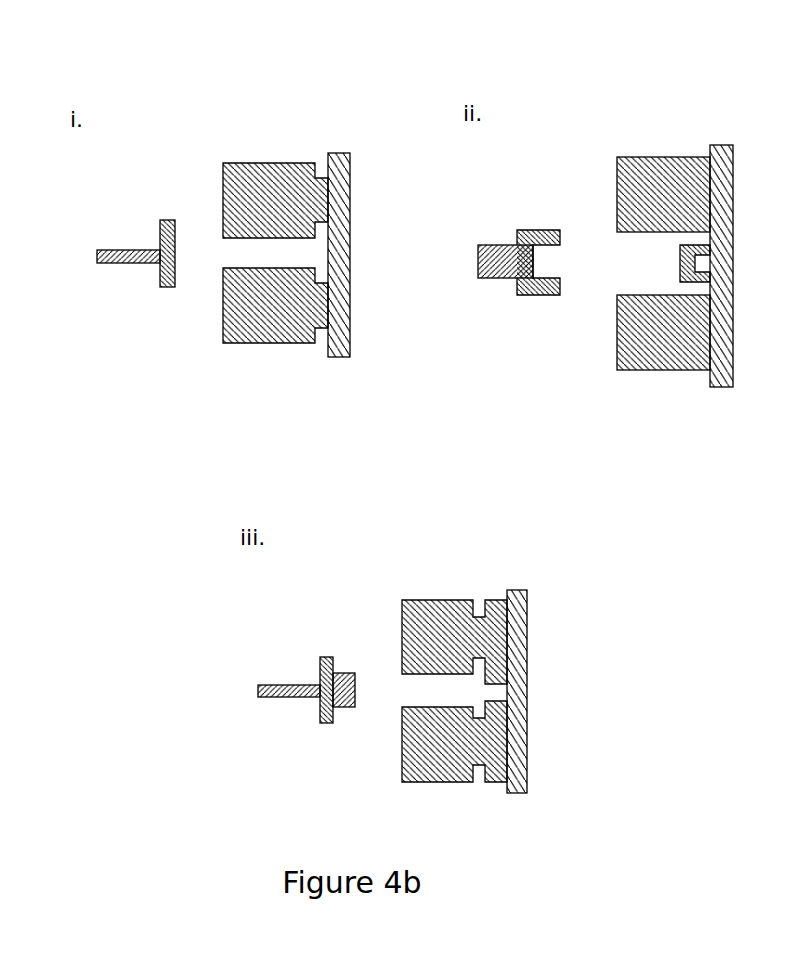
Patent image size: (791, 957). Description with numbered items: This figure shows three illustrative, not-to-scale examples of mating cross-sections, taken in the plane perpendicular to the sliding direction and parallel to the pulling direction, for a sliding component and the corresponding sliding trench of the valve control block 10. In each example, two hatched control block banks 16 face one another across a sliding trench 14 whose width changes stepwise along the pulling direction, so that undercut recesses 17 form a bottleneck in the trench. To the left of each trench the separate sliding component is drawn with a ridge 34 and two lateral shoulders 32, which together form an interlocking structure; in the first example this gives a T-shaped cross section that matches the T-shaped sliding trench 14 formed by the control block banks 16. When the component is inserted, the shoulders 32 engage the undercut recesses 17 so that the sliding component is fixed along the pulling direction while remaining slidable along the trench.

The valve control block 10 is at (321, 104).
The sliding trench 14 is at (461, 475).
The control block bank 16 is at (255, 163).
The undercut recess 17 is at (322, 226).
The lateral shoulder 32 is at (160, 230).
The ridge 34 is at (110, 264).